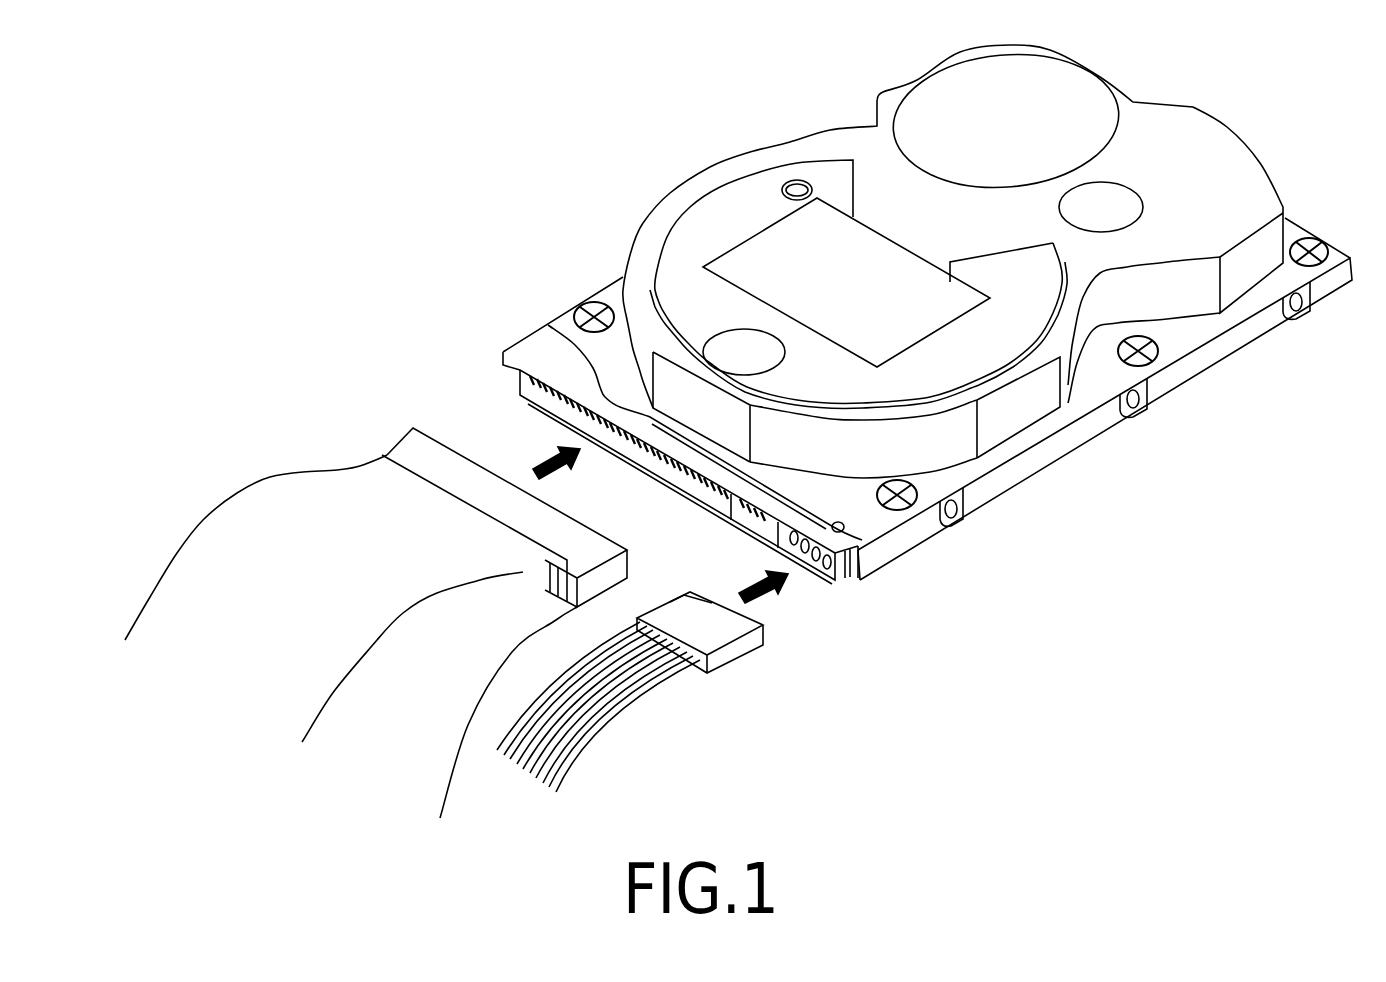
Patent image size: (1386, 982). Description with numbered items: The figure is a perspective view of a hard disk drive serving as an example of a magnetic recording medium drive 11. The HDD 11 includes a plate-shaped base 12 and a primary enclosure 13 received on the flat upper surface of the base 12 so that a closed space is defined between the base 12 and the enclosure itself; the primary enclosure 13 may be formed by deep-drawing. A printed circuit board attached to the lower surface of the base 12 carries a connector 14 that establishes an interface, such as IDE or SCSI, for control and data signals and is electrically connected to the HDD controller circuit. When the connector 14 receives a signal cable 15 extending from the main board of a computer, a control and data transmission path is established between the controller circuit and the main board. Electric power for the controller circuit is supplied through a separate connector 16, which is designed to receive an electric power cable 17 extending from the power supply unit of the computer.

The magnetic recording medium drive 11 is at (618, 204).
The base 12 is at (1351, 280).
The primary enclosure 13 is at (1268, 181).
The connector 14 is at (686, 494).
The signal cable 15 is at (327, 470).
The connector 16 is at (833, 579).
The electric power cable 17 is at (660, 681).